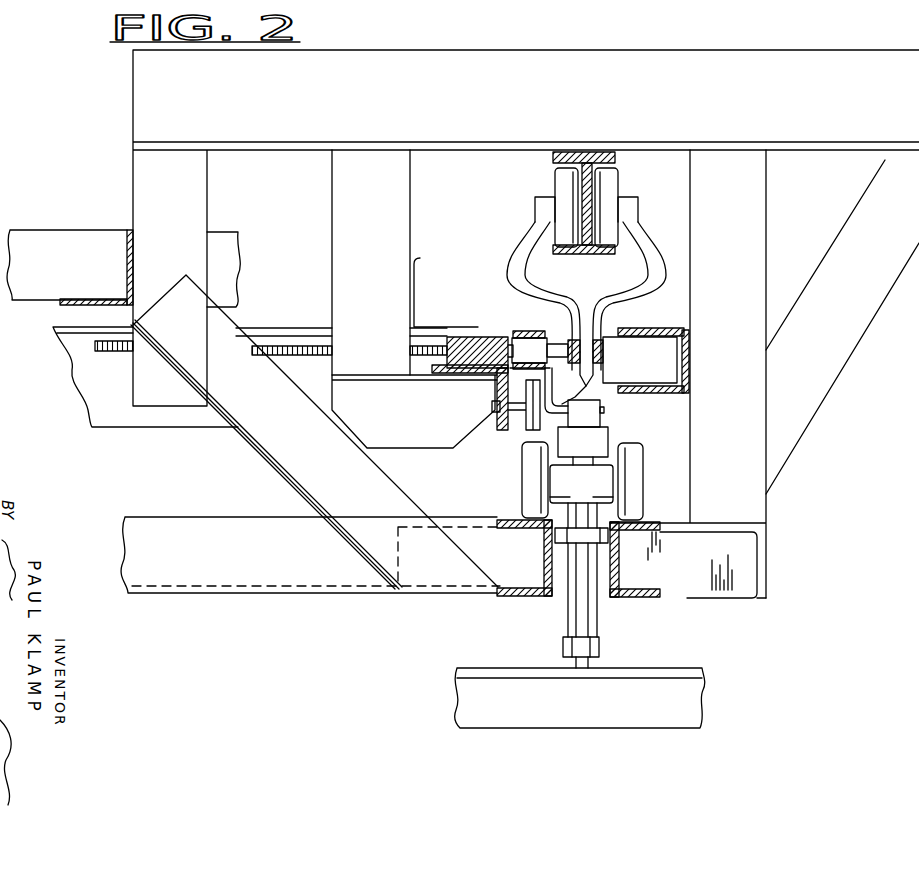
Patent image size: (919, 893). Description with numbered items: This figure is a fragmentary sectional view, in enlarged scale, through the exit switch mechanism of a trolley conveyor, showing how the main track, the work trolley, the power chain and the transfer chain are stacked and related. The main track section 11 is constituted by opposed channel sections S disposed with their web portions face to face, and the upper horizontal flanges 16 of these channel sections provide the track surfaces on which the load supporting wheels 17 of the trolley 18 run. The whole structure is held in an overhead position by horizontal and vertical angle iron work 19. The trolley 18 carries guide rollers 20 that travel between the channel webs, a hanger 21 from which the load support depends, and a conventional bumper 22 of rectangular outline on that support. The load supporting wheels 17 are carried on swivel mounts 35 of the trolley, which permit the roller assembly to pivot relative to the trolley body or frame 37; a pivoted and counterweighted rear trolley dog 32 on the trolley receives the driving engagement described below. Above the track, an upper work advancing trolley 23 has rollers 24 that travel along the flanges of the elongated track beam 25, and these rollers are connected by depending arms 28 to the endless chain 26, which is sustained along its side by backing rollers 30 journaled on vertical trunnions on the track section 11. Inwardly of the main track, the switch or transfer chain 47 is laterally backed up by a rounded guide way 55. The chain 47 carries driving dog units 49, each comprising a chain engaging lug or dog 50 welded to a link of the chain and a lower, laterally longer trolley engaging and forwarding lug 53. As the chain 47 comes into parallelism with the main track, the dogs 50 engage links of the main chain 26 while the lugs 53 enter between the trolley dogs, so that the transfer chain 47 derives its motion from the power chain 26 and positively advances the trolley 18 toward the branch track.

The leading section of main trolley supporting track 11 is at (647, 602).
The upper horizontal flanges 16 is at (527, 529).
The load supporting wheels 17 is at (533, 467).
The trolley 18 is at (598, 472).
The angle iron work 19 is at (272, 463).
The guide rollers 20 is at (574, 545).
The hanger 21 is at (598, 627).
The bumper 22 is at (667, 669).
The upper work advancing trolley 23 is at (591, 274).
The rollers 24 is at (603, 223).
The track beam 25 is at (556, 162).
The endless chain 26 is at (668, 346).
The depending arms 28 is at (645, 260).
The backing rollers 30 is at (660, 363).
The rear trolley dog 32 is at (589, 417).
The swivel mounts 35 is at (572, 494).
The trolley body or frame 37 is at (574, 451).
The switch or transfer chain 47 is at (283, 335).
The driving dog unit 49 is at (499, 378).
The chain engaging lug or dog 50 is at (557, 338).
The trolley engaging and forwarding lug 53 is at (575, 393).
The rounded guide way 55 is at (464, 336).
The channel sections S is at (546, 565).